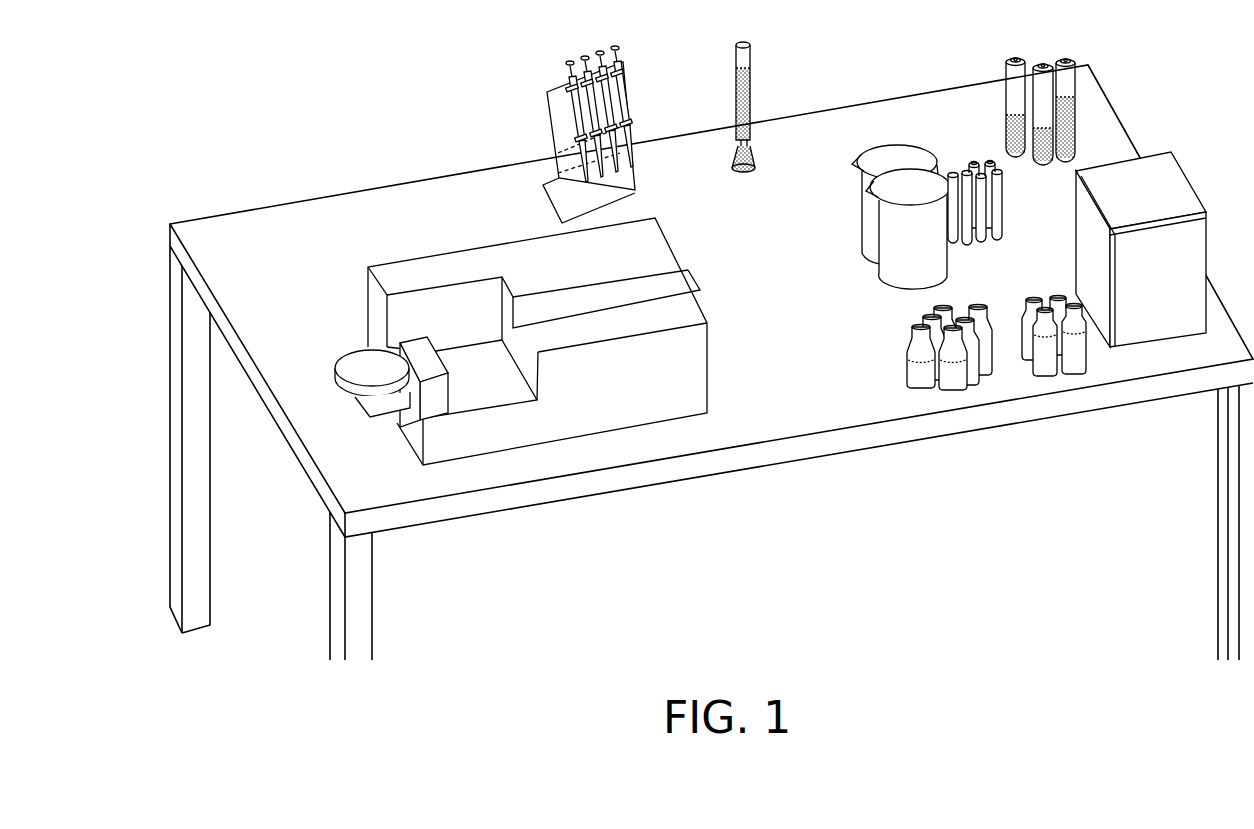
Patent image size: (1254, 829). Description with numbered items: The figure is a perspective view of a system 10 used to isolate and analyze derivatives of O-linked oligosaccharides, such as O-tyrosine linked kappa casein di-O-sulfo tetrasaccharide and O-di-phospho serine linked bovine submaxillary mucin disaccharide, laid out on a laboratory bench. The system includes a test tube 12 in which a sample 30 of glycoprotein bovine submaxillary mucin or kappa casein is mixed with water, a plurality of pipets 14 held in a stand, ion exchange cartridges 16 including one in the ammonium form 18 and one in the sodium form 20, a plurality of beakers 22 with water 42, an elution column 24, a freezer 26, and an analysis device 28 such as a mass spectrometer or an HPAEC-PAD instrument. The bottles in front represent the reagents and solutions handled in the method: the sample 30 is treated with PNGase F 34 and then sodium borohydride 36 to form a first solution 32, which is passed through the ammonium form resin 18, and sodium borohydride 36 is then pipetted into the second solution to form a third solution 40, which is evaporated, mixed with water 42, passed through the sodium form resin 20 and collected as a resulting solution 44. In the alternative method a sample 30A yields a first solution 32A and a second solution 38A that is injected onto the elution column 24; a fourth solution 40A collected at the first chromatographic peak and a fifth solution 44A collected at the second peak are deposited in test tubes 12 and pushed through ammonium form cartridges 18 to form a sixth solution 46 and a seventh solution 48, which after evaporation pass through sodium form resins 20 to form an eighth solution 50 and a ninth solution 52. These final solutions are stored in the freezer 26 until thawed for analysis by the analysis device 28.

The system 10 is at (270, 83).
The test tube 12 is at (995, 200).
The pipets 14 is at (548, 123).
The ion exchange cartridges 16 is at (1051, 85).
The ammonium form cation exchange resin 18 is at (1005, 130).
The sodium form cation exchange resin 20 is at (1080, 86).
The beakers 22 is at (875, 150).
The elution column 24 is at (753, 64).
The freezer 26 is at (1172, 181).
The analysis device 28 is at (457, 262).
The sample 30 is at (910, 336).
The sample 30A is at (1043, 372).
The first solution 32 is at (946, 326).
The first solution 32A is at (924, 321).
The PNGase F 34 is at (958, 299).
The sodium borohydride 36 is at (978, 308).
The second solution 38A is at (1031, 302).
The third solution 40 is at (1060, 297).
The fourth solution 40A is at (983, 247).
The water 42 is at (880, 272).
The resulting solution 44 is at (1088, 358).
The fifth solution 44A is at (985, 244).
The sixth solution 46 is at (969, 164).
The seventh solution 48 is at (989, 160).
The eighth solution 50 is at (1000, 240).
The ninth solution 52 is at (955, 247).